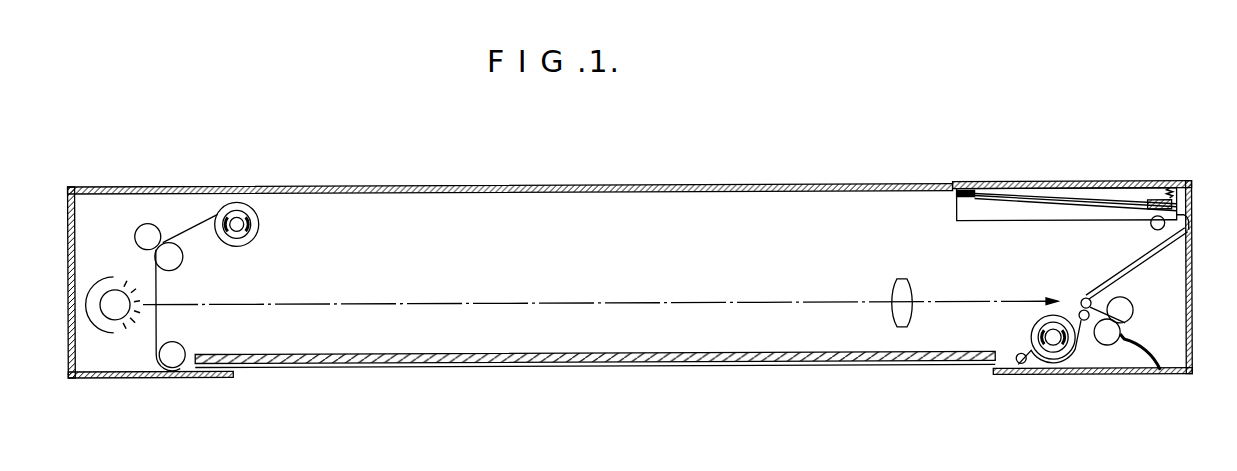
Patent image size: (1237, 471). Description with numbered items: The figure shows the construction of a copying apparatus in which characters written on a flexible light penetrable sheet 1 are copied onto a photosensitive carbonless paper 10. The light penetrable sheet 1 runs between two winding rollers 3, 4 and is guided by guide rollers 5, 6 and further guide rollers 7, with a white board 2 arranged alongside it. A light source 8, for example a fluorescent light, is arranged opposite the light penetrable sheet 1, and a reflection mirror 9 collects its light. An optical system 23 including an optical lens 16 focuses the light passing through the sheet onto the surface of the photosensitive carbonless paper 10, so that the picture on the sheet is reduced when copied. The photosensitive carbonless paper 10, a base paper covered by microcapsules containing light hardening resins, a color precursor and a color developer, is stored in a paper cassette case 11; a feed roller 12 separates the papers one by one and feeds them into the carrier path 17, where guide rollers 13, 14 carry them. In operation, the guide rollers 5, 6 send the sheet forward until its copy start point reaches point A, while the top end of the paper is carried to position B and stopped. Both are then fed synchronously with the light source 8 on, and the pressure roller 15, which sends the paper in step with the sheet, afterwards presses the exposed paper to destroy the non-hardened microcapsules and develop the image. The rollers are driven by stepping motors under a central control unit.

The light penetrable sheet 1 is at (425, 369).
The white board 2 is at (525, 364).
The winding roller 3 is at (252, 212).
The winding roller 4 is at (1066, 364).
The guide roller 5 is at (173, 250).
The guide roller 6 is at (150, 226).
The guide roller 7 is at (169, 364).
The light source 8 is at (115, 334).
The reflection mirror 9 is at (112, 277).
The photosensitive carbonless paper 10 is at (1000, 203).
The paper cassette case 11 is at (1050, 216).
The feed roller 12 is at (1161, 220).
The guide roller 13 is at (1083, 302).
The guide roller 14 is at (1113, 379).
The pressure roller 15 is at (1117, 336).
The optical lens 16 is at (902, 285).
The carrier path 17 is at (1148, 262).
The optical system 23 is at (660, 305).
The point A is at (160, 308).
The position B is at (1080, 305).